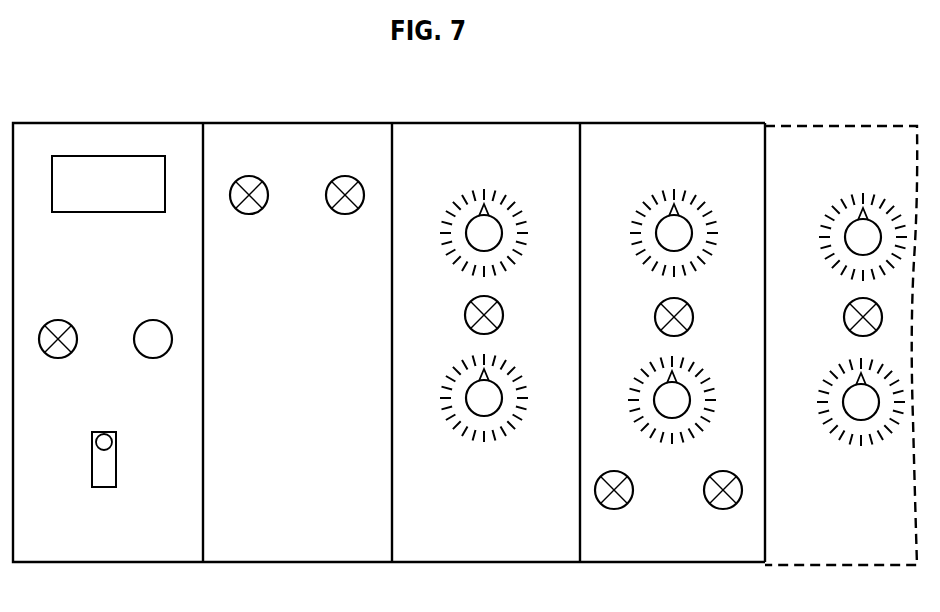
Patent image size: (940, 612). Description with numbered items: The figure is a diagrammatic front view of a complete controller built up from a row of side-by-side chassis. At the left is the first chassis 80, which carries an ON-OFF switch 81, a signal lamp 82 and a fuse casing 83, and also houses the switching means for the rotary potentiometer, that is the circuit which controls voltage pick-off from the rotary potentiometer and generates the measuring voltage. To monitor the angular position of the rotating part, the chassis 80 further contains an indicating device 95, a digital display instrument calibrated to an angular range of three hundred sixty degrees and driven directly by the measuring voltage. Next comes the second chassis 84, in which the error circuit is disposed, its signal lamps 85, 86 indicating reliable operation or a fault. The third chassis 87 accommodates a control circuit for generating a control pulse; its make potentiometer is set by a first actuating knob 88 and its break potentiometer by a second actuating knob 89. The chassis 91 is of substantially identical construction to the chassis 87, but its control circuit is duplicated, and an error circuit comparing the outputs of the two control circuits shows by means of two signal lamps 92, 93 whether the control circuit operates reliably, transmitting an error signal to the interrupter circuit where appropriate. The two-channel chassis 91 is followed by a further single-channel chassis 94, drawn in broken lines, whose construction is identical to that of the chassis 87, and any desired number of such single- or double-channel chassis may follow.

The first chassis 80 is at (160, 128).
The ON-OFF switch 81 is at (112, 468).
The signal lamp 82 is at (58, 320).
The fuse casing 83 is at (150, 320).
The second control panel section 84 is at (297, 128).
The signal lamp 85 is at (249, 178).
The signal lamp 86 is at (345, 178).
The third chassis 87 is at (481, 128).
The first actuating knob 88 is at (471, 224).
The second actuating knob 89 is at (471, 389).
The chassis 91 is at (665, 130).
The signal lamp 92 is at (628, 496).
The signal lamp 93 is at (710, 494).
The further single-channel chassis 94 is at (840, 130).
The indicating device 95 is at (144, 212).